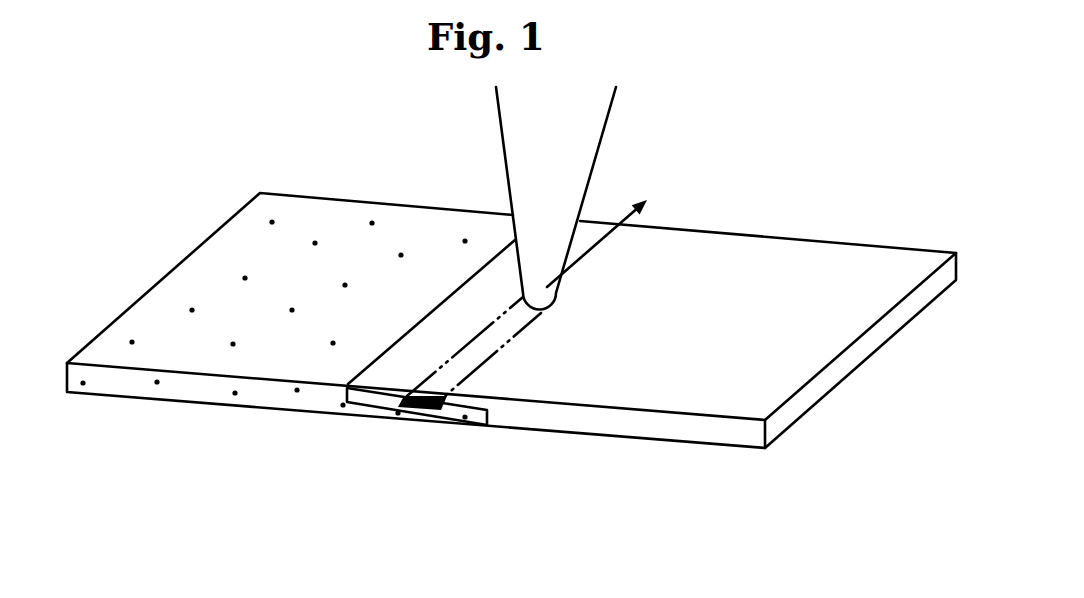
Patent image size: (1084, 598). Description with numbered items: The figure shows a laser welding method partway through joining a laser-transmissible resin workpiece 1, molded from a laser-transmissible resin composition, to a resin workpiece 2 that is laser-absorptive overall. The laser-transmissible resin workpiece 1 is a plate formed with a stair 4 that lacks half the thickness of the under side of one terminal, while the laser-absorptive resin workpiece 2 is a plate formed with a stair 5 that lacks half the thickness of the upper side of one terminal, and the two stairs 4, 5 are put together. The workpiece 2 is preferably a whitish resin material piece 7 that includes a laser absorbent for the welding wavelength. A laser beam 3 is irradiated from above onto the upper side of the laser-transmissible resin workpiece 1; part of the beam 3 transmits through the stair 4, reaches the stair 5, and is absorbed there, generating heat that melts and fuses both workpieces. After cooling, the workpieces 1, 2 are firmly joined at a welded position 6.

The laser-transmissible resin workpiece 1 is at (654, 450).
The laser-absorptive resin workpiece 2 is at (186, 411).
The laser beam 3 is at (567, 177).
The stair 4 is at (383, 397).
The stair 5 is at (370, 408).
The welded position 6 is at (503, 333).
The whitish resin material piece 7 is at (280, 269).